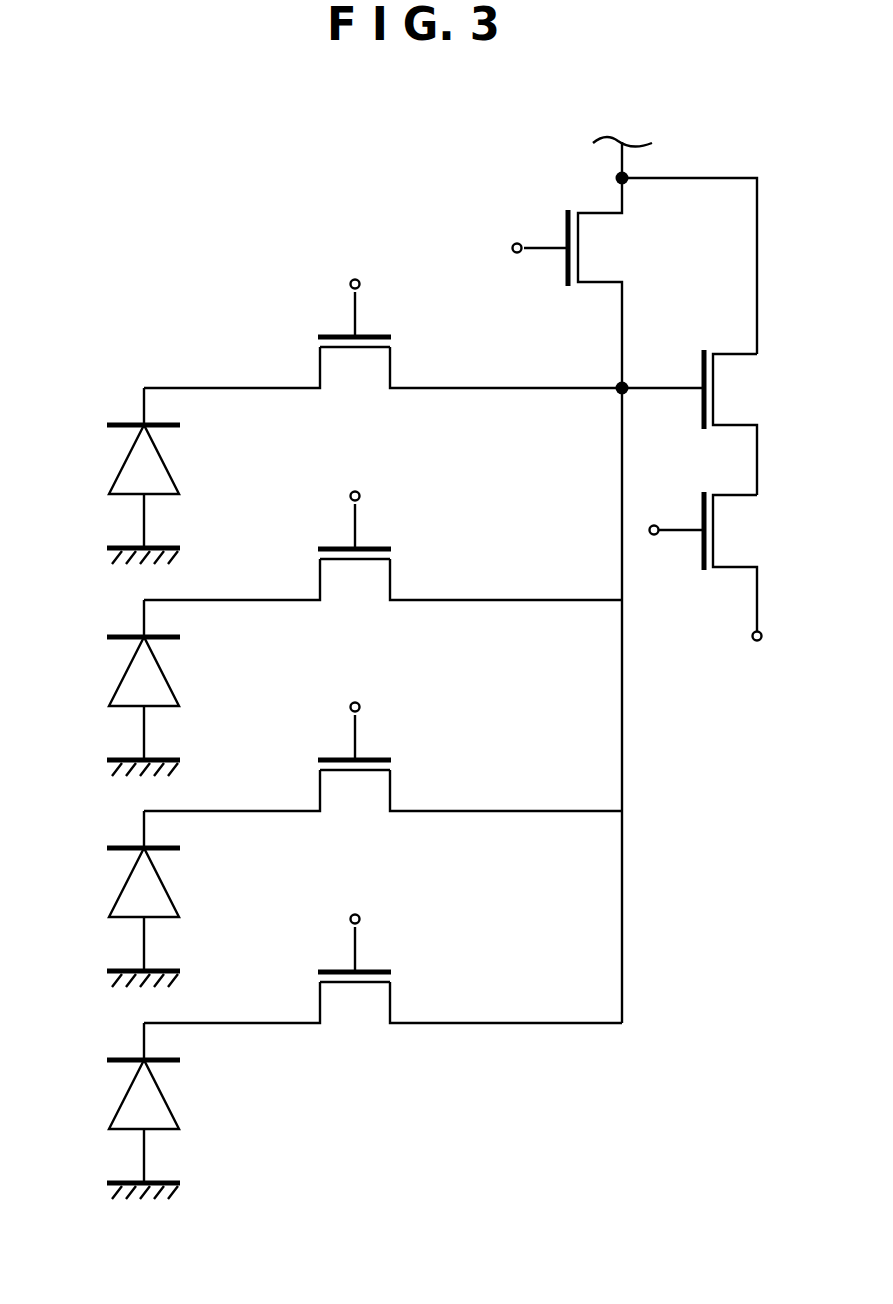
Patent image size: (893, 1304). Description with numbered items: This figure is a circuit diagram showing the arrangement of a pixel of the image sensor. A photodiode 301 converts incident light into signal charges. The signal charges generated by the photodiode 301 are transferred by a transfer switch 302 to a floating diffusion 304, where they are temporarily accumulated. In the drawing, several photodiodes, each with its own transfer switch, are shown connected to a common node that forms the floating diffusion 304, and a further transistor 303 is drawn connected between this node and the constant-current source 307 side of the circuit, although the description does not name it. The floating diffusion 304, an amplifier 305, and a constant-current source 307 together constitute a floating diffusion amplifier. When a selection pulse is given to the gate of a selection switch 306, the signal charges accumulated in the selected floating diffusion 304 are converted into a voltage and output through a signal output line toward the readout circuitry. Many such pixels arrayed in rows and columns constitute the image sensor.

The photodiode 301 is at (118, 472).
The transfer switch 302 is at (317, 353).
The reset transistor 303 is at (562, 270).
The floating diffusion 304 is at (617, 386).
The amplifier 305 is at (720, 355).
The selection switch 306 is at (723, 567).
The constant-current source 307 is at (607, 140).